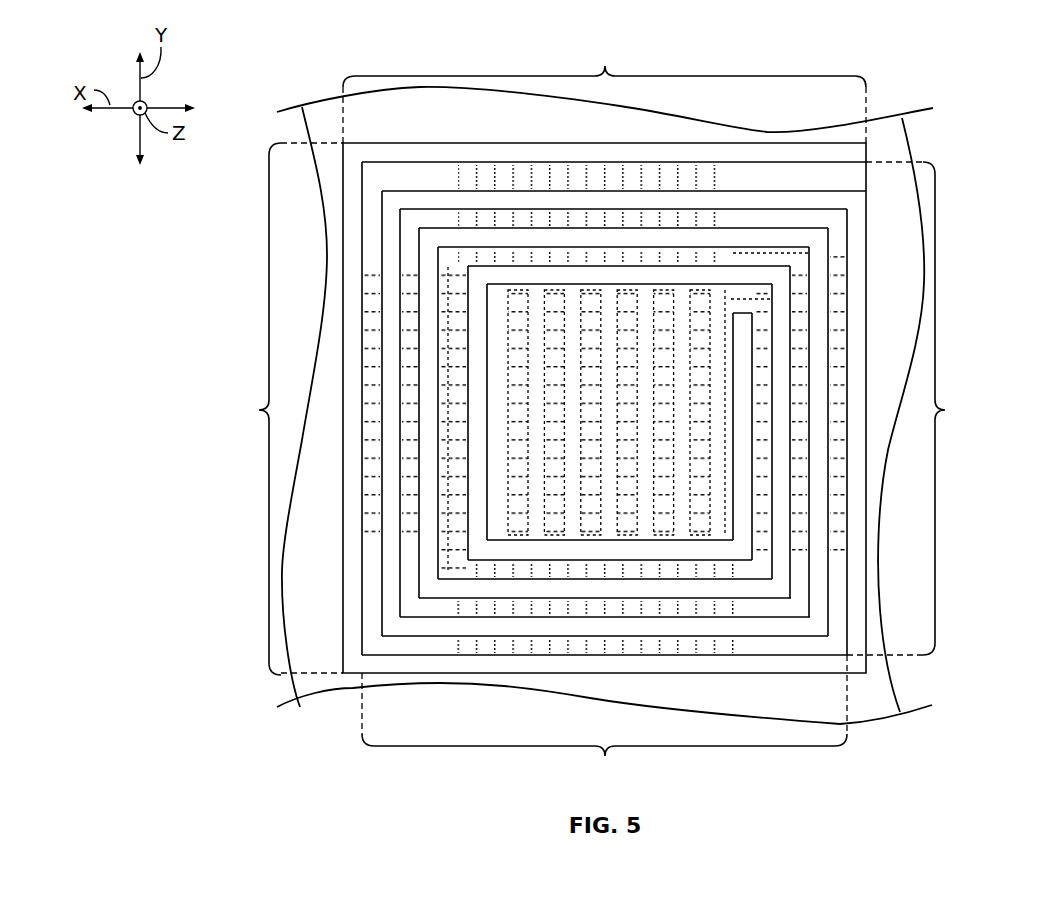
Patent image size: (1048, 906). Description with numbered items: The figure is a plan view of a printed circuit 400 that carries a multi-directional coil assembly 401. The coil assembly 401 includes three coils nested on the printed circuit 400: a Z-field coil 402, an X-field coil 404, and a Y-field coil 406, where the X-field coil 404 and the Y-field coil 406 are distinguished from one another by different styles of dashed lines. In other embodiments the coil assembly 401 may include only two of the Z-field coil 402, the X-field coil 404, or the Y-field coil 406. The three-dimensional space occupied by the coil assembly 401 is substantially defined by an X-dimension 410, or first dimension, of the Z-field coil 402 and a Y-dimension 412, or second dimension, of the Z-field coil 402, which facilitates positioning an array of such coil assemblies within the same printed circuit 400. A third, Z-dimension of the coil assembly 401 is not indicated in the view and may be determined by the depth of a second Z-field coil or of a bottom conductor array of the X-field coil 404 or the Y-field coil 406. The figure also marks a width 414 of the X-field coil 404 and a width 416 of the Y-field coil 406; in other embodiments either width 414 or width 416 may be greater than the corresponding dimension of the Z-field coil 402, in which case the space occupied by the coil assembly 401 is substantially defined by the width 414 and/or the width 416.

The printed circuit 400 is at (891, 312).
The coil assembly 401 is at (807, 136).
The Z-field coil 402 is at (755, 153).
The X-field coil 404 is at (510, 172).
The Y-field coil 406 is at (836, 553).
The X-dimension 410 is at (604, 92).
The Y-dimension 412 is at (278, 409).
The width of the X-field coil 414 is at (919, 408).
The width of the Y-field coil 416 is at (604, 720).